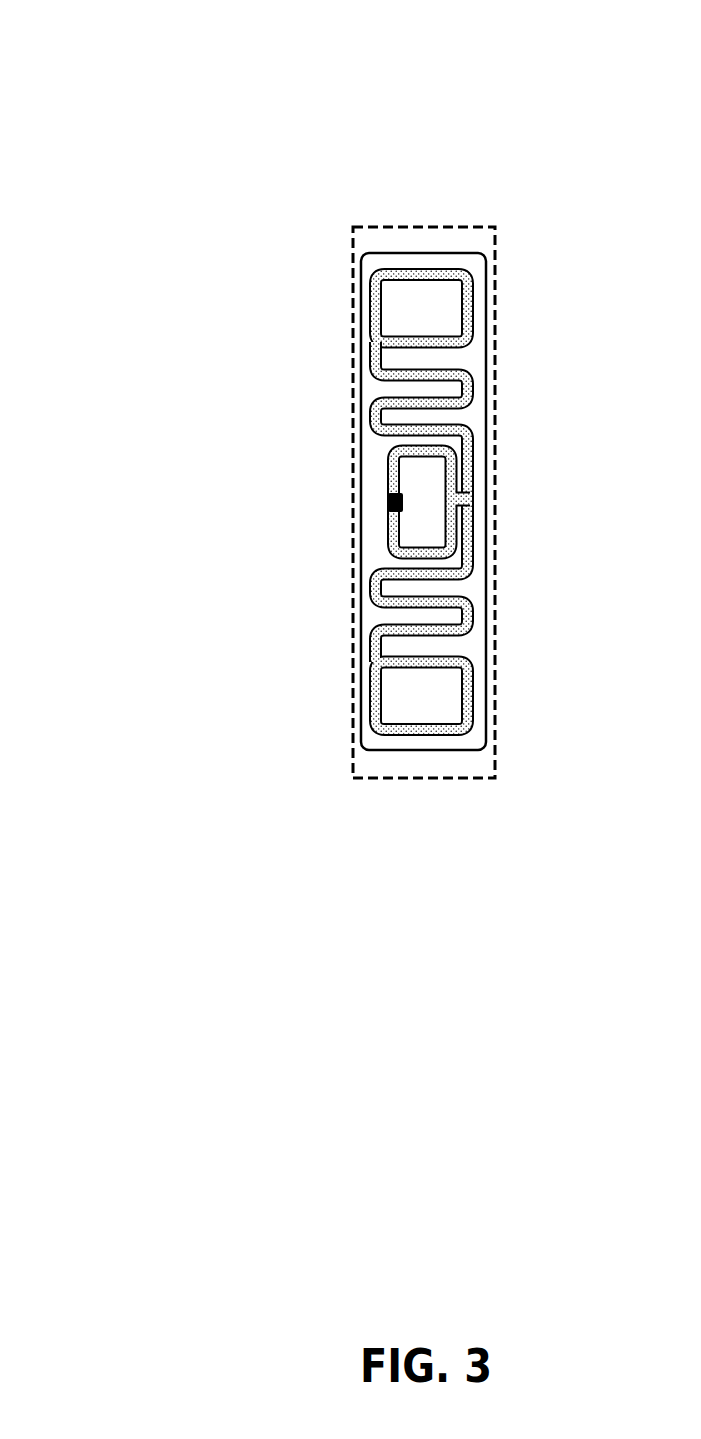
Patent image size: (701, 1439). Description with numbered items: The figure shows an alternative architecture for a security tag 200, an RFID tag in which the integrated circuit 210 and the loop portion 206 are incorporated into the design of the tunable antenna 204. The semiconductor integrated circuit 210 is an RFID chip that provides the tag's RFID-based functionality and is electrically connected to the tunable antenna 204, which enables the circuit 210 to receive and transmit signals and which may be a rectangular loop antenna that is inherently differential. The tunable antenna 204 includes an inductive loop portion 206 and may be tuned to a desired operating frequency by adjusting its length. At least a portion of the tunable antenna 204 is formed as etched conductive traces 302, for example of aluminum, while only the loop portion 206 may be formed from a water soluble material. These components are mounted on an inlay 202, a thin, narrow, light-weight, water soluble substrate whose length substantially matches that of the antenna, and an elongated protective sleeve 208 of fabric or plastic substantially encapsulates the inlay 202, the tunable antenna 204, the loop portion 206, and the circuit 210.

The security tag 200 is at (110, 58).
The inlay 202 is at (470, 643).
The tunable antenna 204 is at (467, 323).
The loop portion 206 is at (388, 518).
The protective sleeve 208 is at (457, 765).
The semiconductor integrated circuit 210 is at (410, 497).
The conductive traces 302 is at (459, 391).